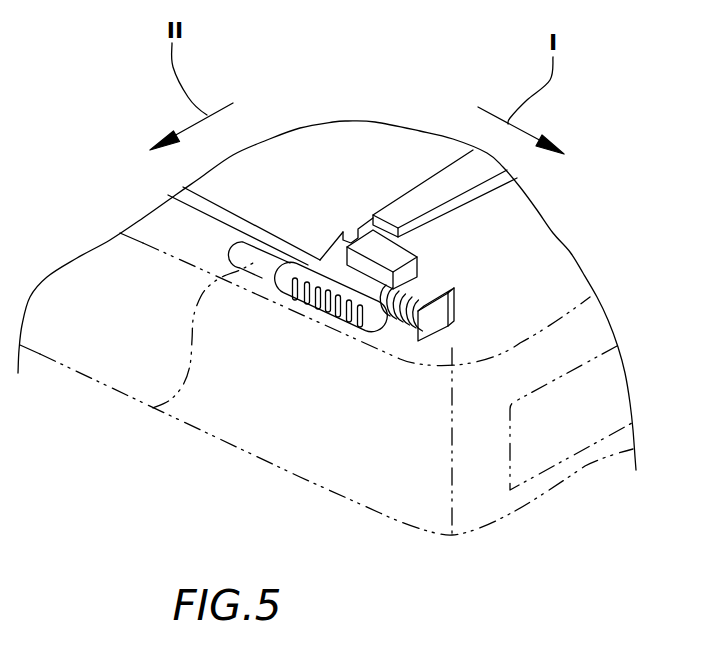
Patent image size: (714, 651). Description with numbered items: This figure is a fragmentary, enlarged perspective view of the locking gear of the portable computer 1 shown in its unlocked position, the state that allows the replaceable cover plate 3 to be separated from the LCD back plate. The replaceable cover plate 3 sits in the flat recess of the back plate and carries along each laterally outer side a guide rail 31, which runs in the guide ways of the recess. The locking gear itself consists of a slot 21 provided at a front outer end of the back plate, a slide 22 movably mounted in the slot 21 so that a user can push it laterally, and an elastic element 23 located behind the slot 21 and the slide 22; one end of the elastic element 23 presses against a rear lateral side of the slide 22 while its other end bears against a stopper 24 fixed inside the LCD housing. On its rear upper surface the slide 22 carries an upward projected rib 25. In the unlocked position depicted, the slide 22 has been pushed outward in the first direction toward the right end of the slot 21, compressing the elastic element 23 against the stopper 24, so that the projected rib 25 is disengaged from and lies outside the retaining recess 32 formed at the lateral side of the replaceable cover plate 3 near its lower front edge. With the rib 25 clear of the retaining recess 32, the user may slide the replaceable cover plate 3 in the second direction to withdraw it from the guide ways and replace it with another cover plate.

The portable computer 1 is at (482, 500).
The slot 21 is at (132, 420).
The slide 22 is at (356, 332).
The elastic element 23 is at (420, 293).
The stopper 24 is at (449, 321).
The projected rib 25 is at (403, 256).
The replaceable cover plate 3 is at (383, 147).
The guide rail 31 is at (440, 147).
The retaining recess 32 is at (350, 232).